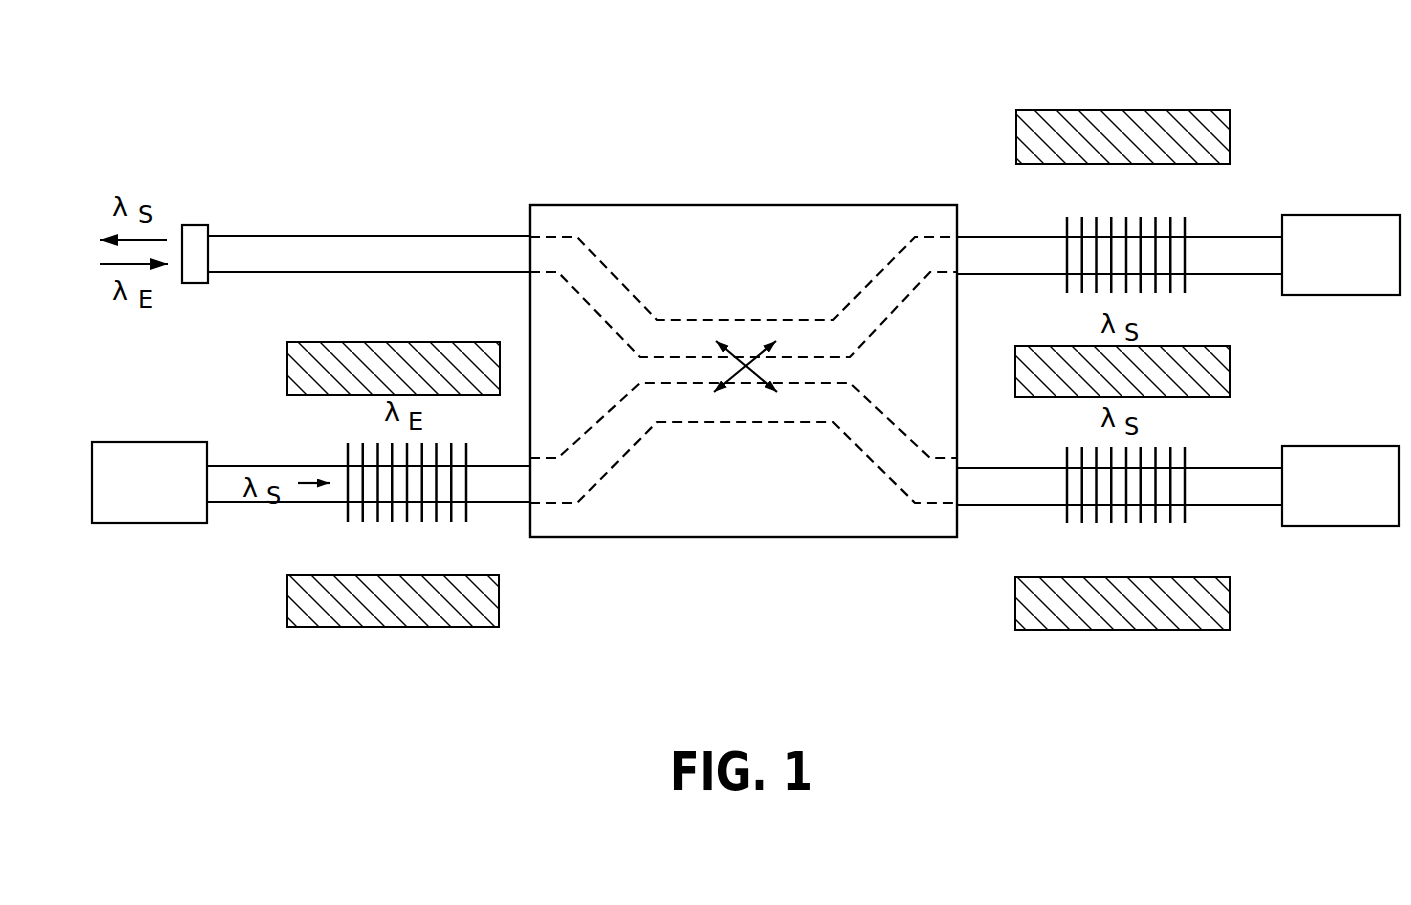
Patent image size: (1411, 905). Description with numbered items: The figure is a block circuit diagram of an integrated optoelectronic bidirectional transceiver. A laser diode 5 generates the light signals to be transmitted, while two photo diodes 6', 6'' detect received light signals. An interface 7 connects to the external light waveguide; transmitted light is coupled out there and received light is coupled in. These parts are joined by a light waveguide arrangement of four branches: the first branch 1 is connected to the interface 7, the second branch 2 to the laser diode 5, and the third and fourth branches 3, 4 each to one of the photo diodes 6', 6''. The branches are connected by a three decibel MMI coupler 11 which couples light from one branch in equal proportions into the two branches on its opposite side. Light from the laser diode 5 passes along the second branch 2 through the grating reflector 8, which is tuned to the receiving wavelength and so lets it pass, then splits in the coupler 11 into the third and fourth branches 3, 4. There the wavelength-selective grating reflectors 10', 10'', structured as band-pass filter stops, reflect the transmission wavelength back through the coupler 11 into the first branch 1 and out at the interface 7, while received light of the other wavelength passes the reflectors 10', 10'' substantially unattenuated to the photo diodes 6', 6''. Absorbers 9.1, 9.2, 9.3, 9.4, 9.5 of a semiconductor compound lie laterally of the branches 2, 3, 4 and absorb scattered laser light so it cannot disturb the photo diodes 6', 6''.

The first branch 1 is at (352, 236).
The second branch 2 is at (503, 485).
The third branch 3 is at (1018, 250).
The fourth branch 4 is at (980, 507).
The laser diode 5 is at (145, 523).
The photo diode 6' is at (1341, 203).
The photo diode 6'' is at (1340, 531).
The interface 7 is at (195, 225).
The wavelength-selective grating reflector 8 is at (413, 490).
The absorber 9.1 is at (445, 356).
The absorber 9.2 is at (285, 597).
The absorber 9.3 is at (1021, 348).
The absorber 9.4 is at (1012, 605).
The absorber 9.5 is at (1077, 110).
The wavelength-selective grating reflector 10' is at (1137, 165).
The wavelength-selective grating reflector 10'' is at (1138, 565).
The 3 dB MMI coupler 11 is at (757, 537).